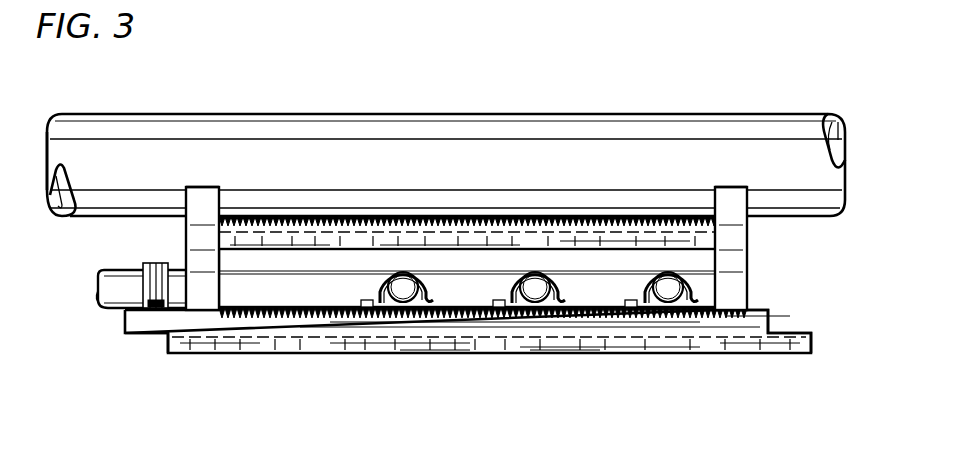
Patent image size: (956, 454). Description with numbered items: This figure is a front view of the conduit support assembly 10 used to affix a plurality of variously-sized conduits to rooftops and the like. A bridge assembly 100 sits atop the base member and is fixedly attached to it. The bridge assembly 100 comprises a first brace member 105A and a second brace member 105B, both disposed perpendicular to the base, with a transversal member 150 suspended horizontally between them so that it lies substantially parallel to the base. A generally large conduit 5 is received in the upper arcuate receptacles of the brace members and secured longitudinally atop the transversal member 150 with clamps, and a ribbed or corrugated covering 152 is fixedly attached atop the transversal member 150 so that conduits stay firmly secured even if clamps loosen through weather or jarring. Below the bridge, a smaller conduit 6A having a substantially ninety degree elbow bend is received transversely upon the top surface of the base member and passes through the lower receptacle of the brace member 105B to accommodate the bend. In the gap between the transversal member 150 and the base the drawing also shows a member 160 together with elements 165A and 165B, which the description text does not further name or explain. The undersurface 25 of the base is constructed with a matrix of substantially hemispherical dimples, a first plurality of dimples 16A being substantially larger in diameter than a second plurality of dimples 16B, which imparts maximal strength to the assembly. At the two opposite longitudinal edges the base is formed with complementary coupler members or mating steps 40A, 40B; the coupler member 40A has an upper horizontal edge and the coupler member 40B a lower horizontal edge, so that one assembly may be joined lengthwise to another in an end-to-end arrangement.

The conduit 5 is at (612, 114).
The conduit 6A is at (112, 288).
The conduit support assembly 10 is at (733, 370).
The first plurality of substantially hemispherical cavities or dimples 16A is at (563, 353).
The second plurality of substantially hemispherical cavities or dimples 16B is at (450, 353).
The undersurface 25 is at (633, 353).
The coupler member or mating step 40A is at (775, 321).
The coupler member or mating step 40B is at (148, 340).
The bridge assembly 100 is at (755, 291).
The first brace member 105A is at (747, 256).
The second brace member 105B is at (185, 233).
The transversal member 150 is at (330, 216).
The ribbed or corrugated covering 152 is at (480, 217).
The carriage body 160 is at (428, 250).
The roller assemblies 165A is at (545, 242).
The lower rack 165B is at (355, 240).